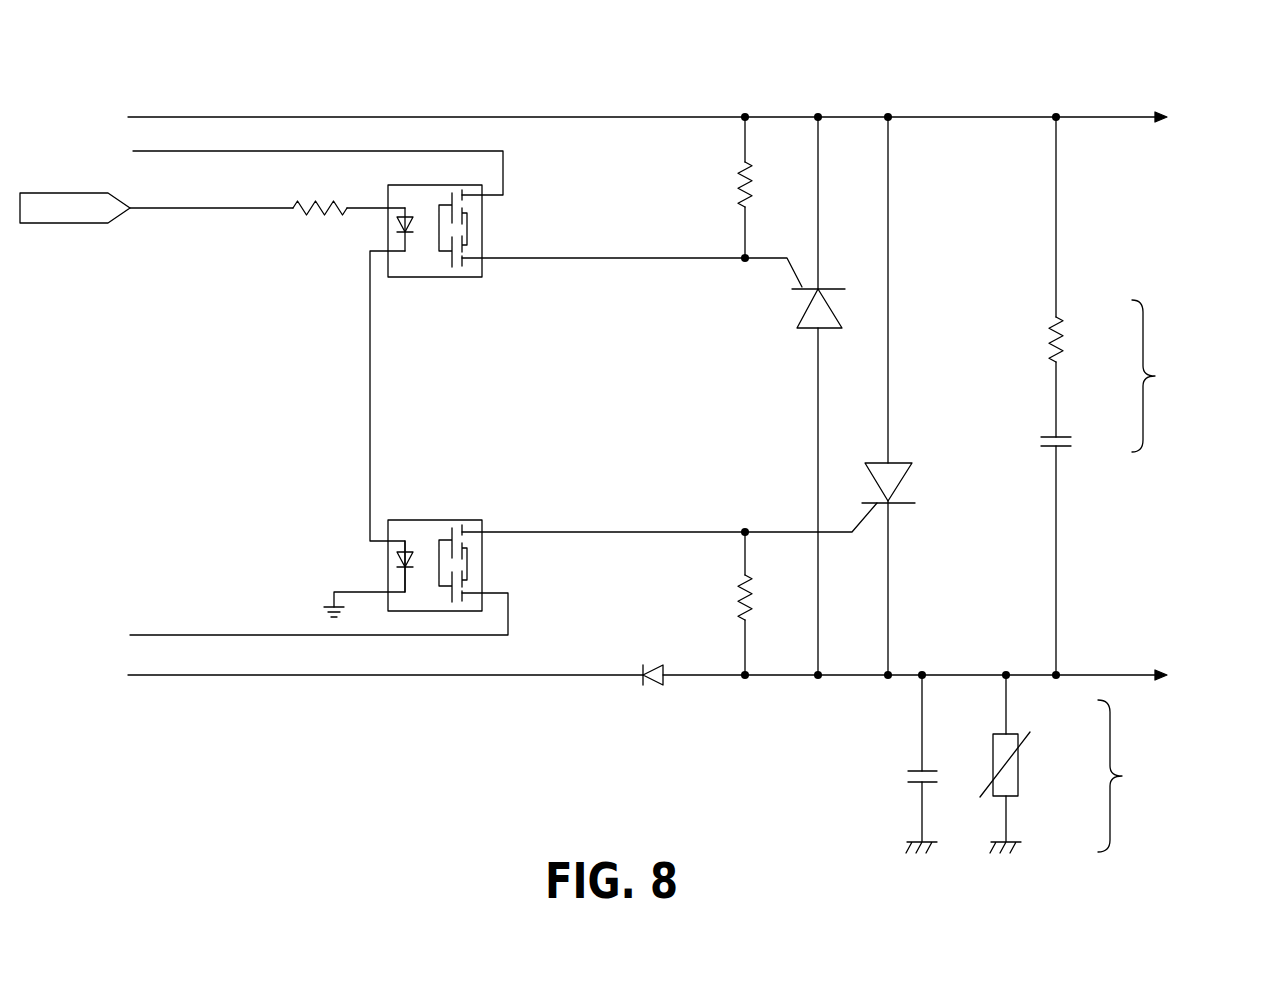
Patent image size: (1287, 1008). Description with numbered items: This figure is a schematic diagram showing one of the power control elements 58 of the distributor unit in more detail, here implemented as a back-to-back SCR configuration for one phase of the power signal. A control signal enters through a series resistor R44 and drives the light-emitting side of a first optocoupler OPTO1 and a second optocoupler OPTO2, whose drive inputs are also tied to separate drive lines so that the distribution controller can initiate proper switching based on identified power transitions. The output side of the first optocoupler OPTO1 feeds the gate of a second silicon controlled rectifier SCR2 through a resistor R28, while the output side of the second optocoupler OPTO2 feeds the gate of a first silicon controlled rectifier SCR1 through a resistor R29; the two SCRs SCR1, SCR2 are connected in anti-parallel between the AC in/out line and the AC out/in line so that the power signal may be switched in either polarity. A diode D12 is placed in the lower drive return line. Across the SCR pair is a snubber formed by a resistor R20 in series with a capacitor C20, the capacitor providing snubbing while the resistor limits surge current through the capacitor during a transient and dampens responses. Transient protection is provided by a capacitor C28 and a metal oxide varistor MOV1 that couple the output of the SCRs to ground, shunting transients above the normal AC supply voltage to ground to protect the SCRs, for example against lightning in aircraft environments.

The power control element 58 is at (675, 76).
The control input resistor R44 is at (320, 225).
The first optocoupler OPTO1 is at (435, 247).
The second optocoupler OPTO2 is at (435, 550).
The first silicon controlled rectifier SCR1 is at (912, 483).
The second silicon controlled rectifier SCR2 is at (829, 323).
The gate resistor R28 is at (723, 184).
The gate resistor R29 is at (722, 597).
The diode D12 is at (654, 690).
The snubber resistor R20 is at (1078, 339).
The snubber capacitor C20 is at (1077, 441).
The transient protection capacitor C28 is at (902, 778).
The metal oxide varistor MOV1 is at (1029, 764).